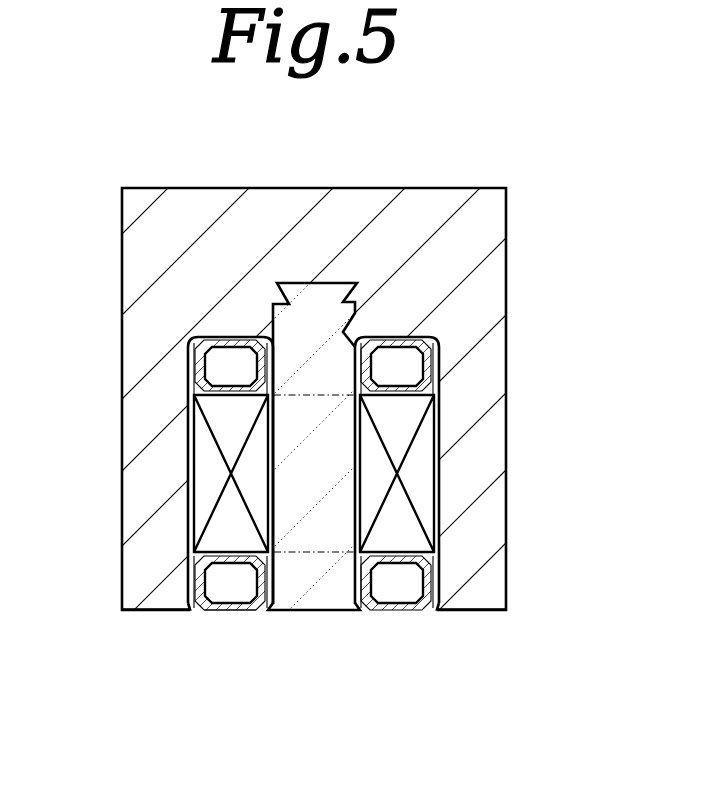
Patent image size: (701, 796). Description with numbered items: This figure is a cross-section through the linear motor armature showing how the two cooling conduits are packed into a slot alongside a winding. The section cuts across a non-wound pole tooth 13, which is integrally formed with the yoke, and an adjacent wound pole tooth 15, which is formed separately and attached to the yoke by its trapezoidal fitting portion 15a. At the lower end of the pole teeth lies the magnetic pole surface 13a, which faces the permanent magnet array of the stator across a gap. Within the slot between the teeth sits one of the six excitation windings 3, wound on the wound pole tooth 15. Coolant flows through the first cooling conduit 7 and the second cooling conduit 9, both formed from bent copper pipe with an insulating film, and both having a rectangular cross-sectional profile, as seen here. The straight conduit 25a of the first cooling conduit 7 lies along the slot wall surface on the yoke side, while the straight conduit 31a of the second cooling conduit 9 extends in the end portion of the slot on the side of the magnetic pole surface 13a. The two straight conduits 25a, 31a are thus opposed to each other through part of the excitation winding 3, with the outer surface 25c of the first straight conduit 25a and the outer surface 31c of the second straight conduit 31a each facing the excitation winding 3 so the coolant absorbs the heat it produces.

The excitation winding 3 is at (208, 490).
The first cooling conduit 7 is at (210, 336).
The second cooling conduit 9 is at (229, 612).
The non-wound pole tooth 13 is at (140, 433).
The magnetic pole surface 13a is at (155, 612).
The wound pole tooth 15 is at (312, 455).
The fitting portion 15a is at (322, 612).
The straight conduit 25a is at (236, 340).
The outer surface 25c is at (232, 397).
The straight conduit 31a is at (247, 612).
The outer surface 31c is at (235, 551).